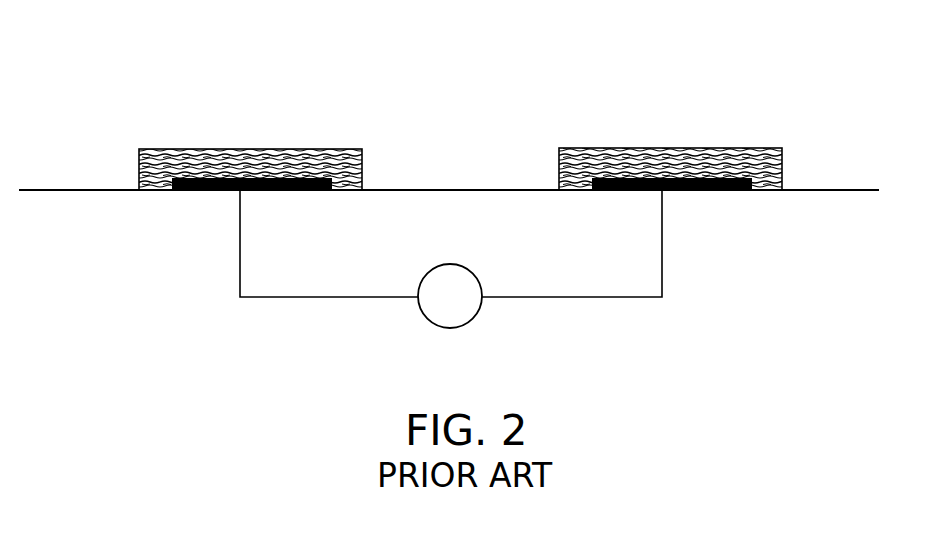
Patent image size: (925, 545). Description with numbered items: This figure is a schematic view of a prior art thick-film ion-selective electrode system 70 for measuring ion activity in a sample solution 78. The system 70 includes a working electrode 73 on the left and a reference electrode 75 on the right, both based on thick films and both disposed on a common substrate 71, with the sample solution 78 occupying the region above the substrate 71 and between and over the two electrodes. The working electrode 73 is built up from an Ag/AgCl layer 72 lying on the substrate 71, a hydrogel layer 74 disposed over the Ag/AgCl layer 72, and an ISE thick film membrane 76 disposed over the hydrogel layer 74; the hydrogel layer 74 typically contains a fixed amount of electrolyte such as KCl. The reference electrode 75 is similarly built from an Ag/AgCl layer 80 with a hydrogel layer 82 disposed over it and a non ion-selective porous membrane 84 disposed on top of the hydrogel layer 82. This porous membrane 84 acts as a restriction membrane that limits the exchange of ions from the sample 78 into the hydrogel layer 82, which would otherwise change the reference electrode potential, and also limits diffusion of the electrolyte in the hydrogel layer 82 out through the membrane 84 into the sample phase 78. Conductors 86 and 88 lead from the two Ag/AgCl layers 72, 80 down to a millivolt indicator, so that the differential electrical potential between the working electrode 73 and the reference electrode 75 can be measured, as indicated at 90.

The ISE system 70 is at (449, 187).
The substrate 71 is at (165, 256).
The Ag/AgCl layer 72 is at (188, 193).
The working electrode 73 is at (245, 144).
The hydrogel layer 74 is at (139, 168).
The reference electrode 75 is at (692, 144).
The ISE thick film membrane 76 is at (213, 160).
The sample solution 78 is at (480, 150).
The Ag/AgCl layer 80 is at (733, 192).
The hydrogel layer 82 is at (782, 170).
The non ion-selective porous membrane 84 is at (705, 155).
The conductor 86 is at (292, 297).
The conductor 88 is at (580, 297).
The differential electrical potential measurement 90 is at (453, 328).